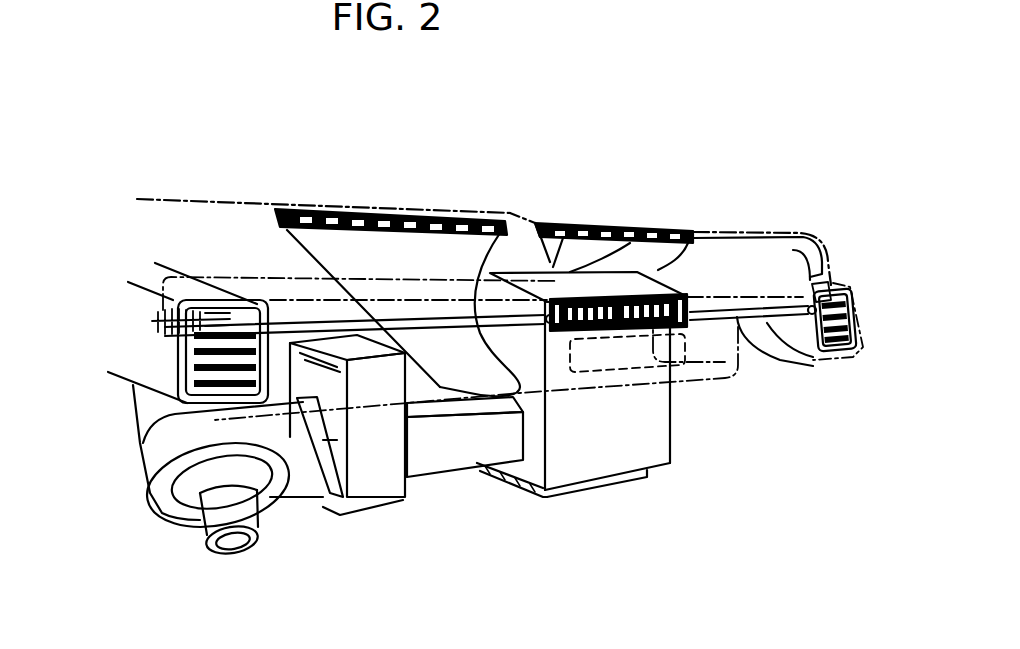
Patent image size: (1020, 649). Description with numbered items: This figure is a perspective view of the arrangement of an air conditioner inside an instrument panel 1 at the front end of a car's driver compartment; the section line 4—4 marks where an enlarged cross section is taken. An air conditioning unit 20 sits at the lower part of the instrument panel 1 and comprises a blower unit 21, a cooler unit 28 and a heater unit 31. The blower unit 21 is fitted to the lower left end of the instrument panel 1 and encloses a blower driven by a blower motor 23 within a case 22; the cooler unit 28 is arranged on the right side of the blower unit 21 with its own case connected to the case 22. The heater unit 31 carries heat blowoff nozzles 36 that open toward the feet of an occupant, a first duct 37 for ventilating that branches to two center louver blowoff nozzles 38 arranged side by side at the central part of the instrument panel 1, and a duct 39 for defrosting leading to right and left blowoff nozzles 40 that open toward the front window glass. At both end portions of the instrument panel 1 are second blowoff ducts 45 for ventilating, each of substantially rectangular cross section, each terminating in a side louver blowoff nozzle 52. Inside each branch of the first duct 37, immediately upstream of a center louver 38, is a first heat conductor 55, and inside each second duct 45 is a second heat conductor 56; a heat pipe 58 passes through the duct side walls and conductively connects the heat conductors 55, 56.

The instrument panel 1 is at (185, 198).
The section line 4— 4 is at (443, 190).
The air conditioning unit 20 is at (339, 530).
The blower unit 21 is at (157, 520).
The case 22 is at (140, 483).
The blower motor 23 is at (210, 547).
The cooler unit 28 is at (380, 510).
The heater unit 31 is at (672, 466).
The heat blowoff nozzles 36 is at (513, 487).
The first duct for ventilating 37 is at (553, 224).
The center louver blowoff nozzles 38 is at (620, 337).
The duct for defrosting 39 is at (438, 350).
The blowoff nozzles for defrosting 40 is at (362, 209).
The second blowoff ducts for ventilating 45 is at (110, 372).
The side louver blowoff nozzle 52 is at (243, 300).
The first heat conductor 55 is at (555, 333).
The second heat conductor 56 is at (150, 313).
The heat pipe 58 is at (310, 333).